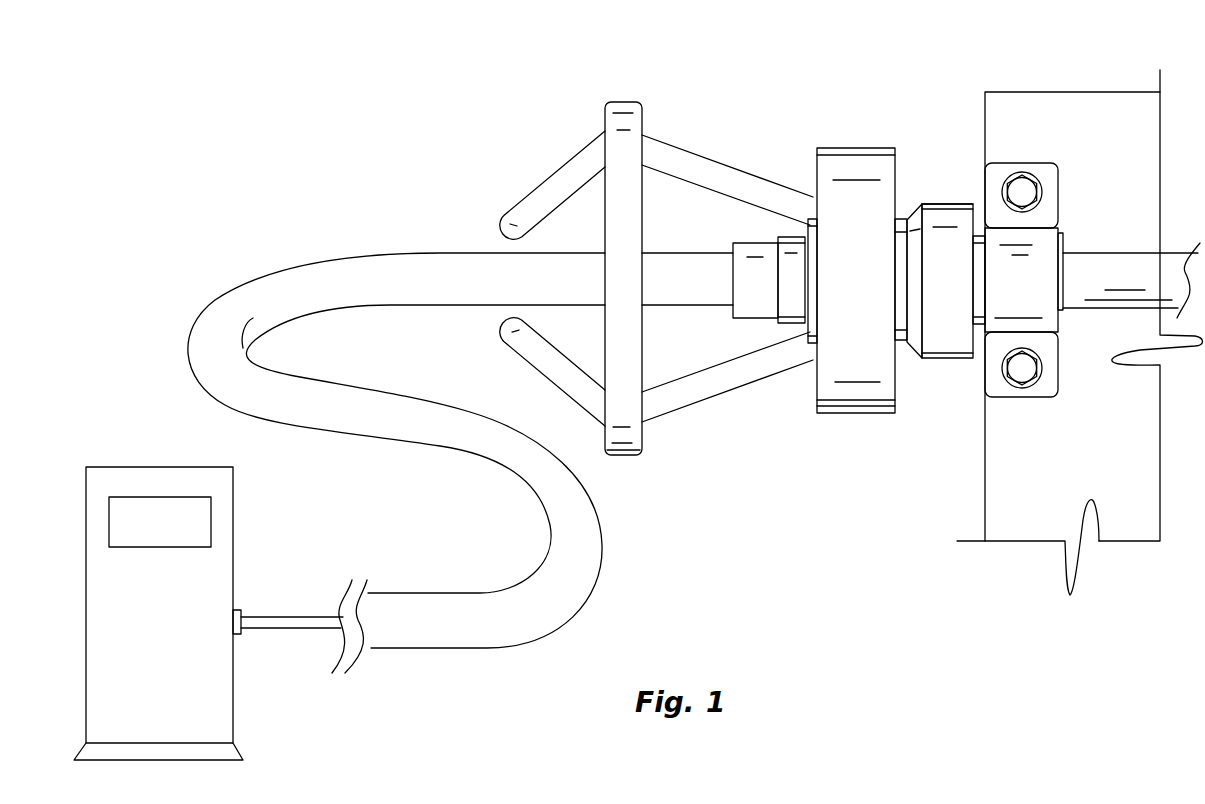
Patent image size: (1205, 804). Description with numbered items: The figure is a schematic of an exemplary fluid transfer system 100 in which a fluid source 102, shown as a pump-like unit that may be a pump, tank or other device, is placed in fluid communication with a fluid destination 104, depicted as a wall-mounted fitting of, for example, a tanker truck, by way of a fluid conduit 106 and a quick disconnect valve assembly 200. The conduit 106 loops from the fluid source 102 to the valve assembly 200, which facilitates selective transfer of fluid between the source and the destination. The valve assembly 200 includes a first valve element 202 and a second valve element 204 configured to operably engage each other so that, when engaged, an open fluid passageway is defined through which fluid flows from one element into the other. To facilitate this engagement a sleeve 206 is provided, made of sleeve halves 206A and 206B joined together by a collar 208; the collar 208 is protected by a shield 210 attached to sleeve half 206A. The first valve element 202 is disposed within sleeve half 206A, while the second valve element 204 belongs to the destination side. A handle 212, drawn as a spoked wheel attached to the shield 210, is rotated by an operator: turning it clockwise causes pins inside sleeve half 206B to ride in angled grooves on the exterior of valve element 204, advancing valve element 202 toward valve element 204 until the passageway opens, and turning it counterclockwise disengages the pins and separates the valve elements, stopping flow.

The fluid transfer system 100 is at (303, 128).
The fluid source 102 is at (122, 456).
The fluid destination 104 is at (1068, 80).
The fluid conduit 106 is at (207, 285).
The quick disconnect valve assembly 200 is at (760, 96).
The first valve element 202 is at (787, 325).
The second valve element 204 is at (982, 314).
The sleeve 206 is at (952, 174).
The sleeve half 206A is at (810, 219).
The sleeve half 206B is at (933, 203).
The collar 208 is at (897, 390).
The shield 210 is at (832, 148).
The handle 212 is at (622, 103).